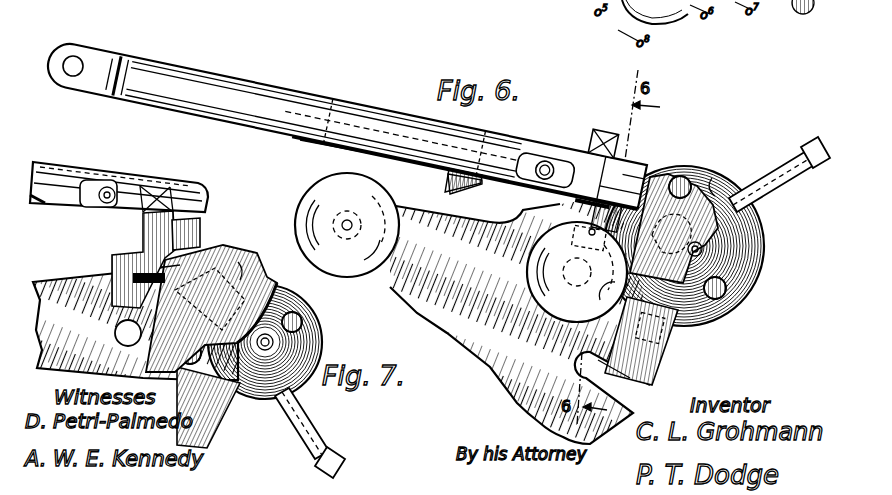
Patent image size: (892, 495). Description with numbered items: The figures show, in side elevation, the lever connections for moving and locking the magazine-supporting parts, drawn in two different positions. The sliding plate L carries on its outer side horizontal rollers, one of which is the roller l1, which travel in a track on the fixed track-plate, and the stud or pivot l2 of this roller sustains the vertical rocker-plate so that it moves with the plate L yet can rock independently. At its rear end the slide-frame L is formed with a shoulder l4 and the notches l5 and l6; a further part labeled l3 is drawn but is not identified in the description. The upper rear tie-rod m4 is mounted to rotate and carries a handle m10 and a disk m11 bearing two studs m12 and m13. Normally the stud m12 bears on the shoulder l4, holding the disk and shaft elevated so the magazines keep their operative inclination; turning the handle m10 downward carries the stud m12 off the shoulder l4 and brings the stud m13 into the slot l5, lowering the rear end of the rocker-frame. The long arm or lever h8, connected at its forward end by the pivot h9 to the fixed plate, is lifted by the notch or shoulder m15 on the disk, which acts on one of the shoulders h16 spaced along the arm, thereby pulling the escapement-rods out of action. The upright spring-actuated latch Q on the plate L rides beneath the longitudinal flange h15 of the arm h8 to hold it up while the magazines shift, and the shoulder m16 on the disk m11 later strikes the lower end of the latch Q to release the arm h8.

In FIG. 6, the long arm or lever h8 is at (188, 88).
In FIG. 7, the long arm or lever h8 is at (127, 187).
In FIG. 6, the pivot h9 is at (75, 58).
In FIG. 6, the longitudinal flange h15 is at (347, 117).
In FIG. 6, the shoulders h16 is at (350, 163).
In FIG. 7, the shoulders h16 is at (203, 230).
In FIG. 6, the roller l1 is at (577, 272).
In FIG. 7, the roller l1 is at (347, 225).
In FIG. 7, the stud or pivot l2 is at (345, 224).
In FIG. 6, the arm l3 is at (629, 288).
In FIG. 6, the shoulder l4 is at (714, 186).
In FIG. 7, the shoulder l4 is at (236, 274).
In FIG. 7, the notch or slot l5 is at (165, 348).
In FIG. 6, the notch l6 is at (609, 371).
In FIG. 6, the sliding plate L is at (520, 320).
In FIG. 7, the sliding plate L is at (135, 322).
In FIG. 6, the upright spring-actuated latch Q is at (605, 160).
In FIG. 7, the upright spring-actuated latch Q is at (143, 233).
In FIG. 6, the tie-rod m4 is at (696, 249).
In FIG. 7, the tie-rod m4 is at (252, 345).
In FIG. 6, the handle m10 is at (778, 185).
In FIG. 7, the handle m10 is at (325, 442).
In FIG. 6, the disk m11 is at (740, 275).
In FIG. 7, the disk m11 is at (290, 354).
In FIG. 6, the stud m12 is at (687, 177).
In FIG. 7, the stud m12 is at (307, 313).
In FIG. 6, the stud m13 is at (727, 305).
In FIG. 7, the stud m13 is at (183, 445).
In FIG. 6, the notch or indentation m15 is at (650, 175).
In FIG. 7, the notch or indentation m15 is at (225, 308).
In FIG. 6, the shoulder m16 is at (657, 340).
In FIG. 7, the shoulder m16 is at (170, 285).